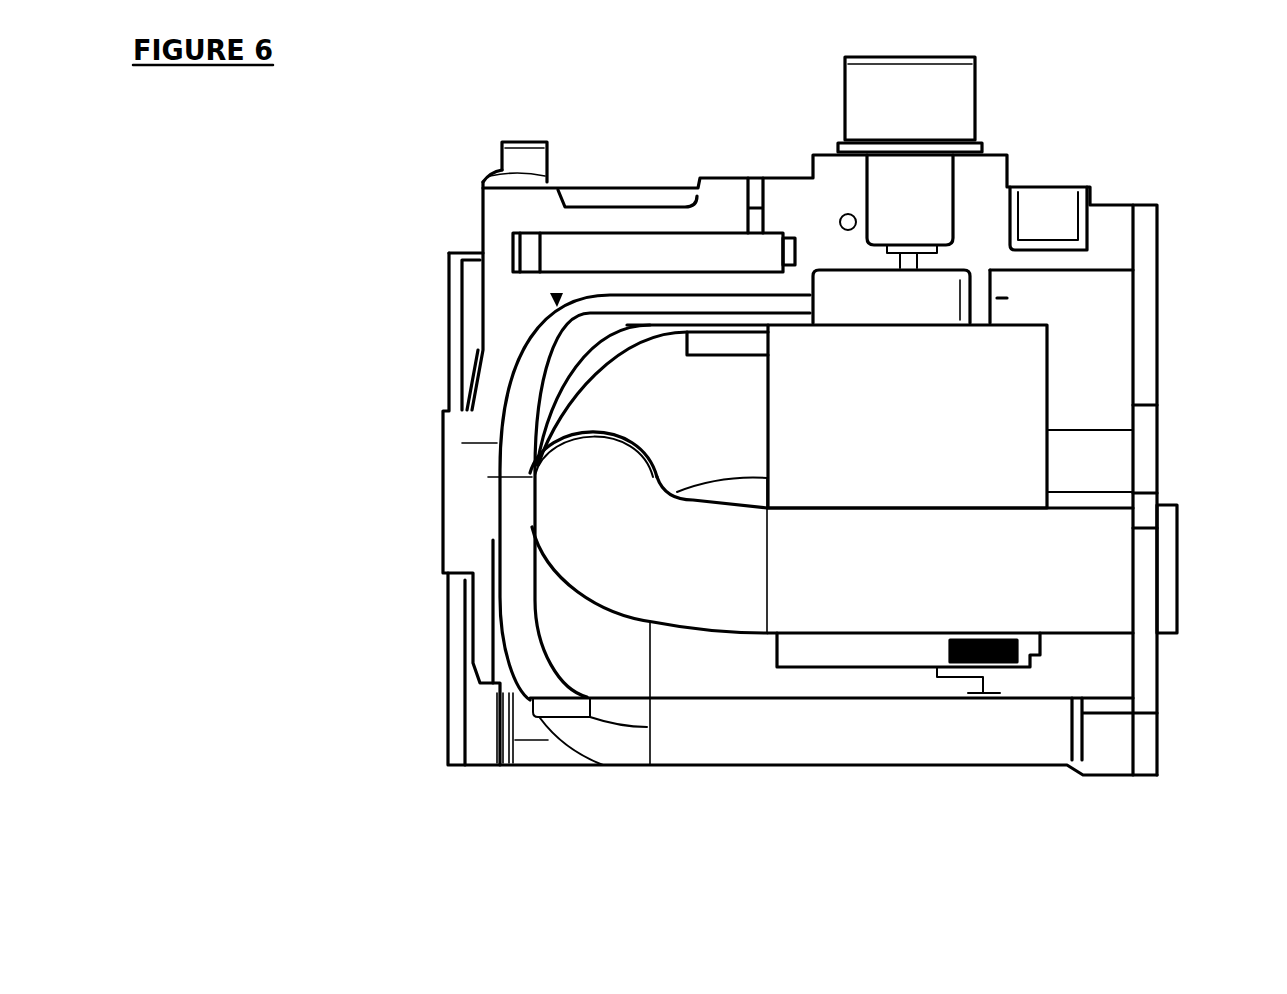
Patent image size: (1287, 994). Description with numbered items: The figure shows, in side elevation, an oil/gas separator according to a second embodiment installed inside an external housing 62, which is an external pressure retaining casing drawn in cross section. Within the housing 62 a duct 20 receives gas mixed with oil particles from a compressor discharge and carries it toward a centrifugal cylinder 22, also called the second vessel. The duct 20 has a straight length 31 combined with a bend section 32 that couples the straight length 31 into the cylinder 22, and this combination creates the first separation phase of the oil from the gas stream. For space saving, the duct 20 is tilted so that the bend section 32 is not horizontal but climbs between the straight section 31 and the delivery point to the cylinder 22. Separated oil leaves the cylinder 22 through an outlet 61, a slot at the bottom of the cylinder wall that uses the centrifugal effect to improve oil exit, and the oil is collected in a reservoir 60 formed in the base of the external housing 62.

The duct 20 is at (1180, 568).
The centrifugal cylinder 22 is at (1050, 395).
The straight length of the duct 31 is at (870, 638).
The bend section 32 is at (590, 417).
The oil reservoir 60 is at (950, 767).
The outlet slot 61 is at (987, 663).
The external housing 62 is at (1118, 230).